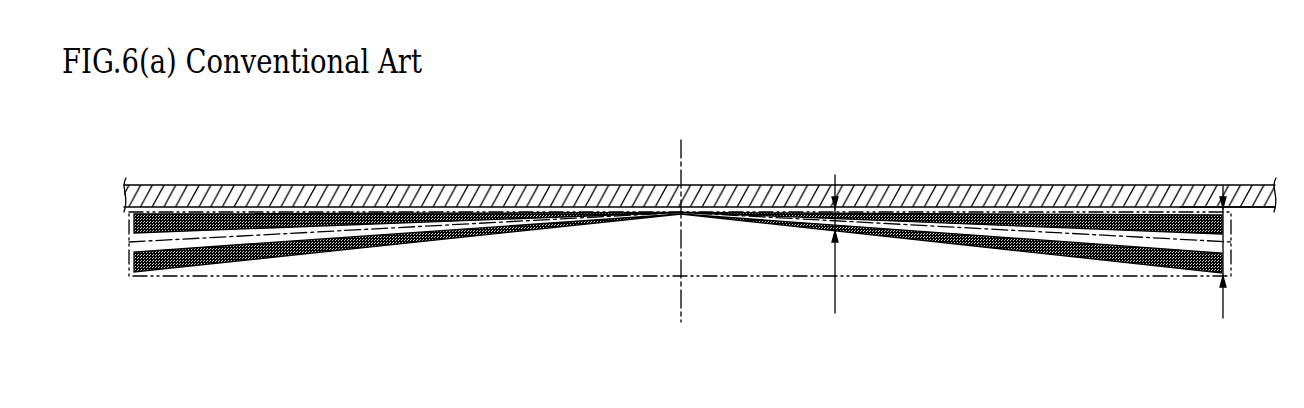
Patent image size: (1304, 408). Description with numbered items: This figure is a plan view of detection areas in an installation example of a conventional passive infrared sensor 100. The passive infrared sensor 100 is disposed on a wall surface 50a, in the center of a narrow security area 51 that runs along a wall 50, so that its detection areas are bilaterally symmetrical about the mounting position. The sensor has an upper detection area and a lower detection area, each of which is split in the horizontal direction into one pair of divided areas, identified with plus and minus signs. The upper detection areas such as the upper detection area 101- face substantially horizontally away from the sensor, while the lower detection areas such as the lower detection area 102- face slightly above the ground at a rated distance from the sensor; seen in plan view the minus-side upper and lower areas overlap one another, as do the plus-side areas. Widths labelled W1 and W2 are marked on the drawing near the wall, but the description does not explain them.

The wall 50 is at (1150, 186).
The wall surface 50a is at (1261, 207).
The security area 51 is at (455, 262).
The passive infrared sensor 100 is at (680, 213).
The upper detection area 101- is at (678, 286).
The lower detection area 102- is at (1117, 220).
The gap width W1 is at (1250, 256).
The gap width W2 is at (861, 244).